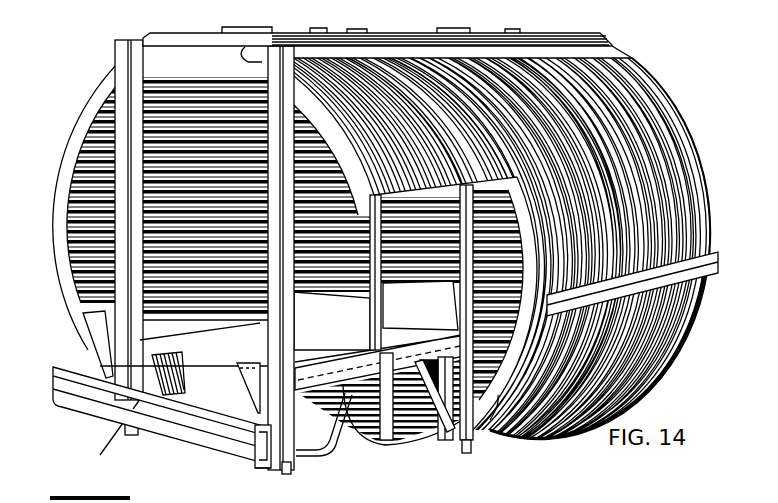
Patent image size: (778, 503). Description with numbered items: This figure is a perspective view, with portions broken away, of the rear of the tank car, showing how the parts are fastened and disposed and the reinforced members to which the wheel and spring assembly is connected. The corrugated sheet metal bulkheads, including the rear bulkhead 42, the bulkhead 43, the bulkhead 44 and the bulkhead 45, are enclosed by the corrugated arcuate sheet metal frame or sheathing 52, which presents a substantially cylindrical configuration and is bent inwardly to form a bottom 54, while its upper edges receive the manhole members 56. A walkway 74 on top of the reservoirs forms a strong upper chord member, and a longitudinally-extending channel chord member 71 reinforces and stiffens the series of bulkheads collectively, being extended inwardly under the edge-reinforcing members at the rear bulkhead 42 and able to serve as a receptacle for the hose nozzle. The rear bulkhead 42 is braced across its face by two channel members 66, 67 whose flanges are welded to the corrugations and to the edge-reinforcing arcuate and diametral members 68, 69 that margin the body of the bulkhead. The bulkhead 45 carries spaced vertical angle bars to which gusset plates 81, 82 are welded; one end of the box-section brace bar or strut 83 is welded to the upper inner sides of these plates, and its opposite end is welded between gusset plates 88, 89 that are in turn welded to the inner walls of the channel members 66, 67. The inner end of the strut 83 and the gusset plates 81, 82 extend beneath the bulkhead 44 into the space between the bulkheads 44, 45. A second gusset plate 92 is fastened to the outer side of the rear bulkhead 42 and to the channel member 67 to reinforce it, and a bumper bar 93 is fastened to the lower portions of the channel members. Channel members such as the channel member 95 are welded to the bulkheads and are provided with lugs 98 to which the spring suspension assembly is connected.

The rear bulkhead 42 is at (50, 181).
The bulkhead 43 is at (332, 321).
The bulkhead 44 is at (420, 305).
The bulkhead 45 is at (515, 395).
The sheet metal frame 52 is at (704, 146).
The bottom 54 is at (348, 358).
The manhole member 56 is at (318, 28).
The channel member 66 is at (115, 46).
The channel member 67 is at (250, 45).
The edge-reinforcing arcuate member 68 is at (84, 122).
The edge-reinforcing diametral member 69 is at (225, 362).
The chord member 71 is at (705, 266).
The walkway 74 is at (572, 38).
The gusset plate 81 is at (432, 420).
The gusset plate 82 is at (452, 418).
The brace bar or strut member 83 is at (386, 440).
The gusset plate 88 is at (172, 393).
The gusset plate 89 is at (336, 430).
The gusset plate 92 is at (242, 386).
The bumper bar 93 is at (212, 448).
The channel member 95 is at (490, 420).
The lug 98 is at (470, 453).